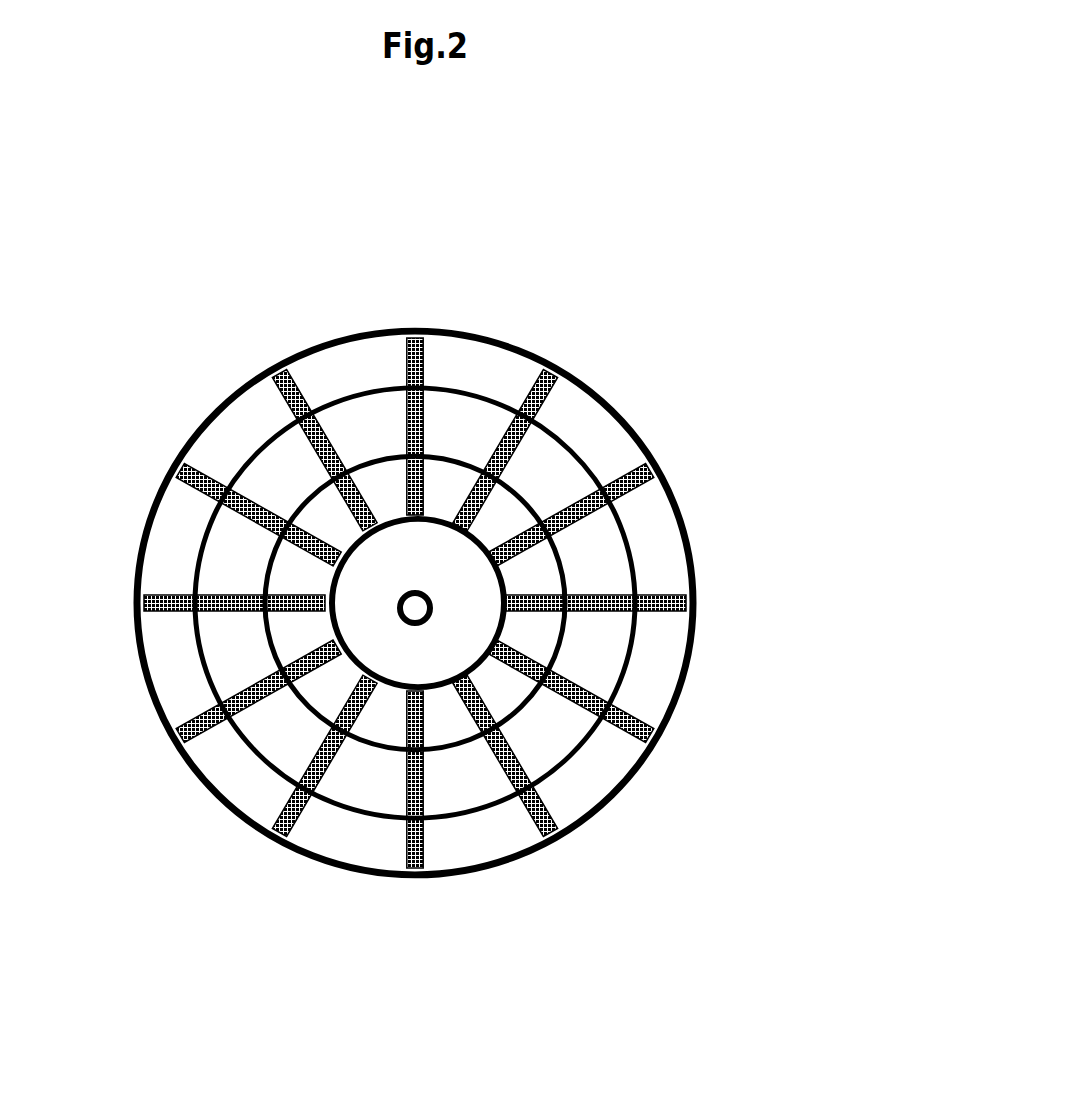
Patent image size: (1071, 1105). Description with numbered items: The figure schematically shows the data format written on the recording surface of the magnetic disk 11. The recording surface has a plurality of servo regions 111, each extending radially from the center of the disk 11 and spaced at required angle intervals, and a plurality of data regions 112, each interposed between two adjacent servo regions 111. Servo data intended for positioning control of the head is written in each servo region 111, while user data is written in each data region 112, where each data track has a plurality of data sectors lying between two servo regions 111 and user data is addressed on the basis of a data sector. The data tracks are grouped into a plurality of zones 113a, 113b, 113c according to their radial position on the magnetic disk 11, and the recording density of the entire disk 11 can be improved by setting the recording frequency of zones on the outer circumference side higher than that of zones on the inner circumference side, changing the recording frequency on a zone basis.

The magnetic disk 11 is at (489, 624).
The servo region 111 is at (664, 468).
The data region 112 is at (553, 624).
The zone 113a is at (662, 677).
The zone 113b is at (548, 738).
The zone 113c is at (443, 735).